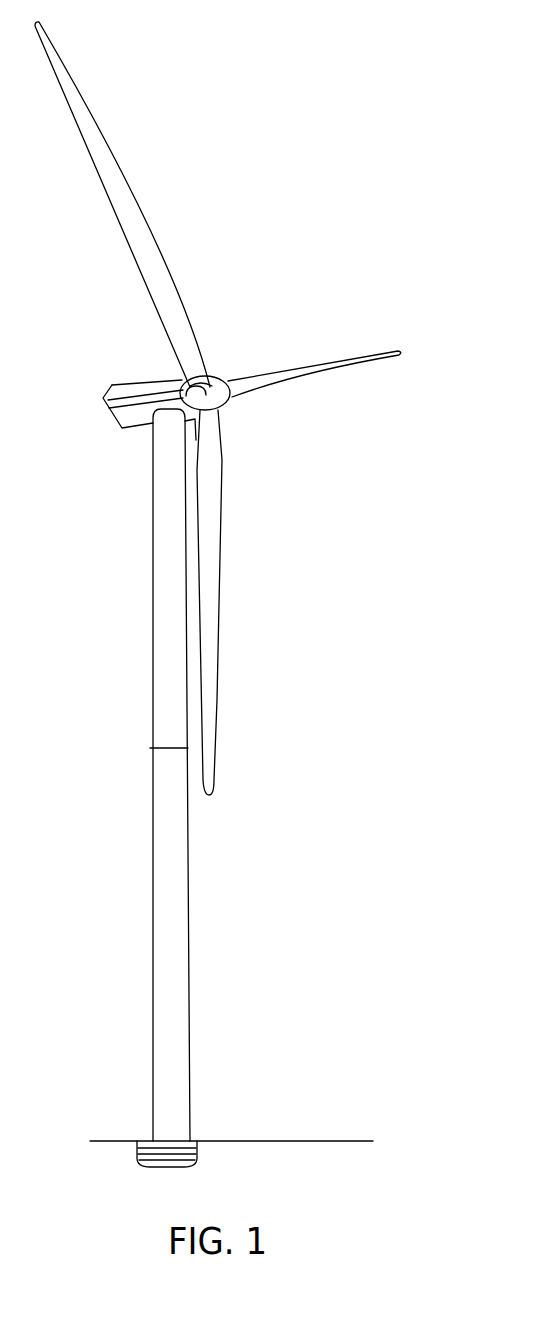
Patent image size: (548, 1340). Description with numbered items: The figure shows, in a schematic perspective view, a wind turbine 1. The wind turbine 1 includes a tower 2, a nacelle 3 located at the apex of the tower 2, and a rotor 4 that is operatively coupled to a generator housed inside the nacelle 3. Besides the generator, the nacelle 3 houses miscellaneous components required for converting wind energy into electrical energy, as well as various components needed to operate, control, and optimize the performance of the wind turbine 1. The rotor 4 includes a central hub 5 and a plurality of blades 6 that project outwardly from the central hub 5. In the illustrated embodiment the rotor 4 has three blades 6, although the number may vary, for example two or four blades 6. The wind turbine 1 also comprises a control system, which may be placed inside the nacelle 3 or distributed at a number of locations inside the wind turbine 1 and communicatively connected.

The wind turbine 1 is at (251, 594).
The tower 2 is at (168, 898).
The nacelle 3 is at (127, 390).
The rotor 4 is at (218, 408).
The central hub 5 is at (222, 400).
The blades 6 is at (102, 162).